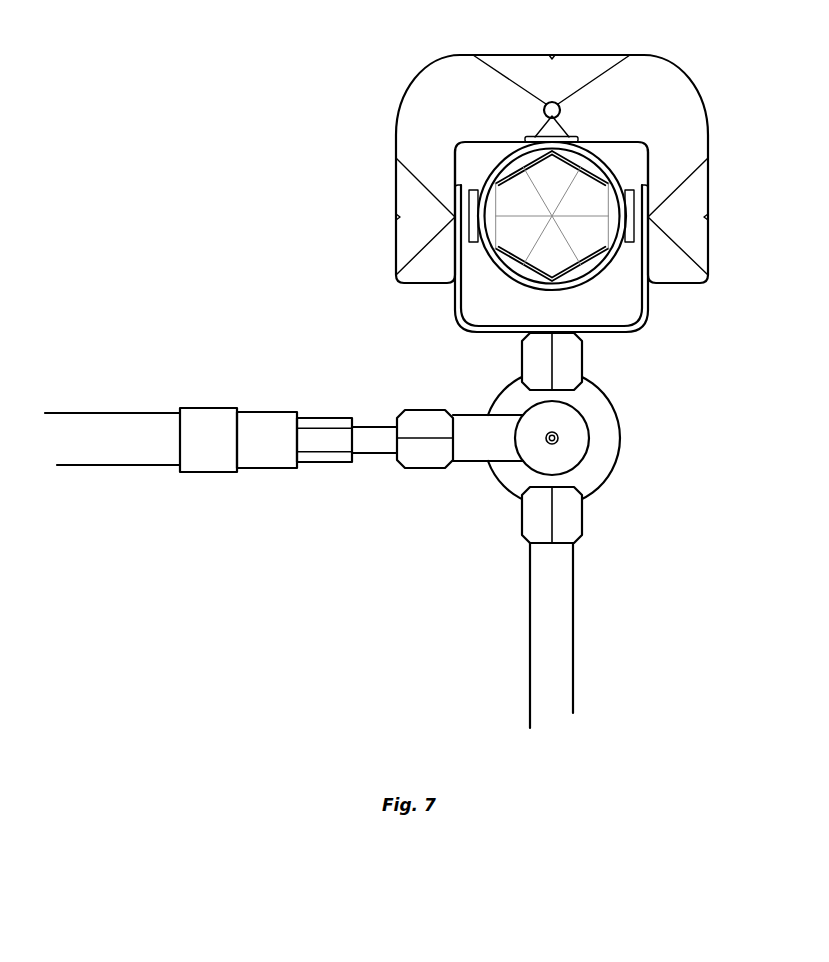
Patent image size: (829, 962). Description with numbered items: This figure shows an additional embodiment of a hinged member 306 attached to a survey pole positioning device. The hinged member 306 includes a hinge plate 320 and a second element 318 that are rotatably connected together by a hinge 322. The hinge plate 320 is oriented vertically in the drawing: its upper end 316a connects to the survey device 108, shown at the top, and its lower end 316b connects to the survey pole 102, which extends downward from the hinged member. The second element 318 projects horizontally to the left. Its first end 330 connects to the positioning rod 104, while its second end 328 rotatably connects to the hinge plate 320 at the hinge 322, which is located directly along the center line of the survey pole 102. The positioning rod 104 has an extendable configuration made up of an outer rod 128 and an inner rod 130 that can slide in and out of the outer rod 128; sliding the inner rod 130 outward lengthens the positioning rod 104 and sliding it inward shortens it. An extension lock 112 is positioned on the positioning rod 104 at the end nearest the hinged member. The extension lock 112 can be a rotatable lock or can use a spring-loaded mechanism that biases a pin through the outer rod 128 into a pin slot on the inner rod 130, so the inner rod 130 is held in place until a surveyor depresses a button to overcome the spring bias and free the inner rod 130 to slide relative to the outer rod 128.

The survey pole 102 is at (565, 573).
The positioning rod 104 is at (110, 413).
The survey device 108 is at (572, 55).
The extension lock 112 is at (211, 408).
The outer rod 128 is at (263, 468).
The inner rod 130 is at (322, 417).
The hinged member 306 is at (647, 402).
The upper end 316a is at (582, 350).
The lower end 316b is at (582, 522).
The second element 318 is at (463, 455).
The hinge plate 320 is at (507, 395).
The hinge 322 is at (545, 442).
The second end 328 is at (572, 450).
The first end 330 is at (413, 417).